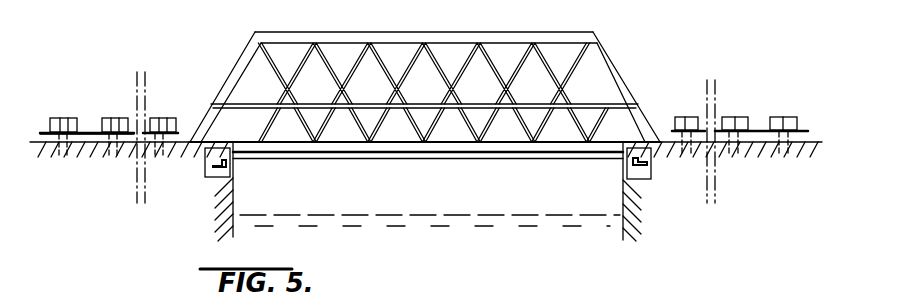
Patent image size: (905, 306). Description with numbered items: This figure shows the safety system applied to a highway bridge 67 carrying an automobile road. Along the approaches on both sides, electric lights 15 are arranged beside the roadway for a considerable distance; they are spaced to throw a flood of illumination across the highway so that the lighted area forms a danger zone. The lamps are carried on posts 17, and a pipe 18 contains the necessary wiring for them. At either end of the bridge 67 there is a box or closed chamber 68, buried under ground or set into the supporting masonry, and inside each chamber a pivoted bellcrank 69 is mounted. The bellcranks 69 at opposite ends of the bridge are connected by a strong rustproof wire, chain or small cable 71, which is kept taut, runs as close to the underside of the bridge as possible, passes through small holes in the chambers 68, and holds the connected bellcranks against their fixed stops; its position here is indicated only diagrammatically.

The electric lights 15 is at (104, 124).
The posts 17 is at (163, 138).
The pipe 18 is at (88, 134).
The bridge 67 is at (613, 79).
The box or closed chamber 68 is at (223, 173).
The bellcrank 69 is at (213, 168).
The wire, chain or small cable 71 is at (452, 159).